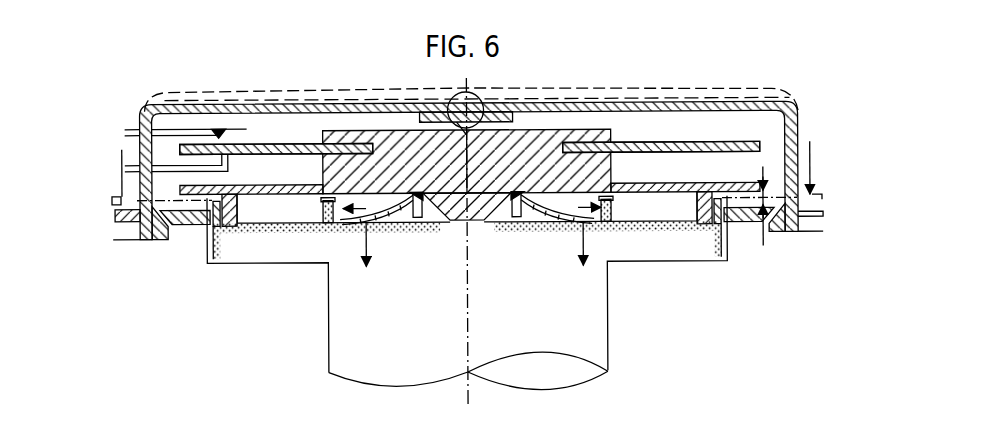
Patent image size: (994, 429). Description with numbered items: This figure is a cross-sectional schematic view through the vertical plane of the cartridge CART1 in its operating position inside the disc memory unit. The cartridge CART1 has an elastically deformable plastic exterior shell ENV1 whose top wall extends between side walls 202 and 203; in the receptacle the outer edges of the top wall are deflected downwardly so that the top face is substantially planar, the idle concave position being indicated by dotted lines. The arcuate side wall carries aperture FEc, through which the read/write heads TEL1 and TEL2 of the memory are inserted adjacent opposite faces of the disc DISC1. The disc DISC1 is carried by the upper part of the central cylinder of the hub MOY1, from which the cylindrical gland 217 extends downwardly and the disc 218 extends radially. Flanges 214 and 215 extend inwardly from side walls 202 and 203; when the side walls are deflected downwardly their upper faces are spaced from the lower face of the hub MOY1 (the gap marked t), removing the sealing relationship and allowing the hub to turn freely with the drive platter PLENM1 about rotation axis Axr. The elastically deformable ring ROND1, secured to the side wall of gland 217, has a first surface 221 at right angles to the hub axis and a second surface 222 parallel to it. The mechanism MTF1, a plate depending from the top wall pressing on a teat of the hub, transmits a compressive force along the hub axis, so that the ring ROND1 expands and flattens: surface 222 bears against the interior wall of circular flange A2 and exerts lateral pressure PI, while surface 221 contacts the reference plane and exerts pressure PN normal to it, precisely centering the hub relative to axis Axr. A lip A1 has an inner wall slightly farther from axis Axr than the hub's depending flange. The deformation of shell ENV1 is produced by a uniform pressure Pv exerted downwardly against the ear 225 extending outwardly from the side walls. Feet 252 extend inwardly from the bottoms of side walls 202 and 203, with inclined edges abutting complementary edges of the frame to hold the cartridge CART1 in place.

The side wall 202 is at (139, 142).
The side wall 203 is at (800, 172).
The flange 214 is at (189, 211).
The flange 215 is at (771, 218).
The cylindrical gland 217 is at (497, 199).
The disc 218 is at (642, 182).
The first surface 221 is at (600, 222).
The second surface 222 is at (319, 205).
The ear 225 is at (115, 214).
The feet 252 is at (141, 238).
The aperture FEc is at (140, 111).
The read/write head TEL1 is at (224, 131).
The read/write head TEL2 is at (229, 166).
The force transmitting mechanism MTF1 is at (470, 100).
The hub MOY1 is at (600, 123).
The disc DISC1 is at (764, 145).
The cartridge CART1 is at (797, 127).
The exterior shell ENV1 is at (179, 211).
The drive platter PLENM1 is at (700, 278).
The elastically deformable ring ROND1 is at (533, 227).
The lip A1 is at (226, 232).
The circular flange A2 is at (338, 226).
The normal pressure PN is at (490, 243).
The lateral pressure PI is at (472, 203).
The uniform pressure Pv is at (825, 169).
The gap thickness t is at (771, 201).
The rotation axis Axr is at (467, 339).